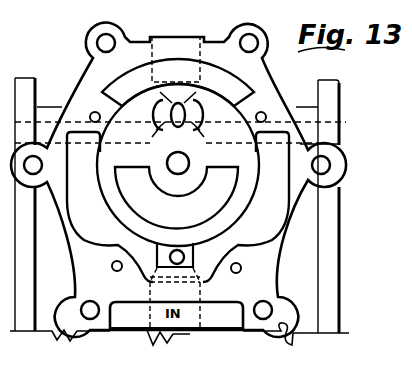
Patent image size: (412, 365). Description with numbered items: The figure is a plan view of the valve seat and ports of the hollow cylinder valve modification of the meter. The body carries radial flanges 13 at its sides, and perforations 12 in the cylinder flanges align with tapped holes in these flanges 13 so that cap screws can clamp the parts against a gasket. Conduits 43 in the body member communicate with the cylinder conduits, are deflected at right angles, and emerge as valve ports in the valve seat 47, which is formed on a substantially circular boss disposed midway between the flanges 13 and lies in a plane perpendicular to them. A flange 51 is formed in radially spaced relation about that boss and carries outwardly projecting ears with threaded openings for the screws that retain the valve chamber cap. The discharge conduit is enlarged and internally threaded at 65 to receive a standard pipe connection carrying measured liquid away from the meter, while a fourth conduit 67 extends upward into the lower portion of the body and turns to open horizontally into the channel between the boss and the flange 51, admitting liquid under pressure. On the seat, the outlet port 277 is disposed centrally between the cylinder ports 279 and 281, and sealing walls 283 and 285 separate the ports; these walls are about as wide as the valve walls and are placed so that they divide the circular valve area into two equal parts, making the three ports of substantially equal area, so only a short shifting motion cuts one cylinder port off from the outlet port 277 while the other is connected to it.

The perforations 12 is at (324, 253).
The radial flanges 13 is at (338, 80).
The conduits 43 is at (346, 125).
The valve seat 47 is at (176, 188).
The flange 51 is at (290, 221).
The internally threaded enlargement 65 is at (180, 48).
The fourth conduit 67 is at (183, 254).
The outlet port 277 is at (203, 131).
The cylinder port 279 is at (152, 91).
The cylinder port 281 is at (210, 96).
The sealing wall 283 is at (149, 146).
The sealing wall 285 is at (201, 128).